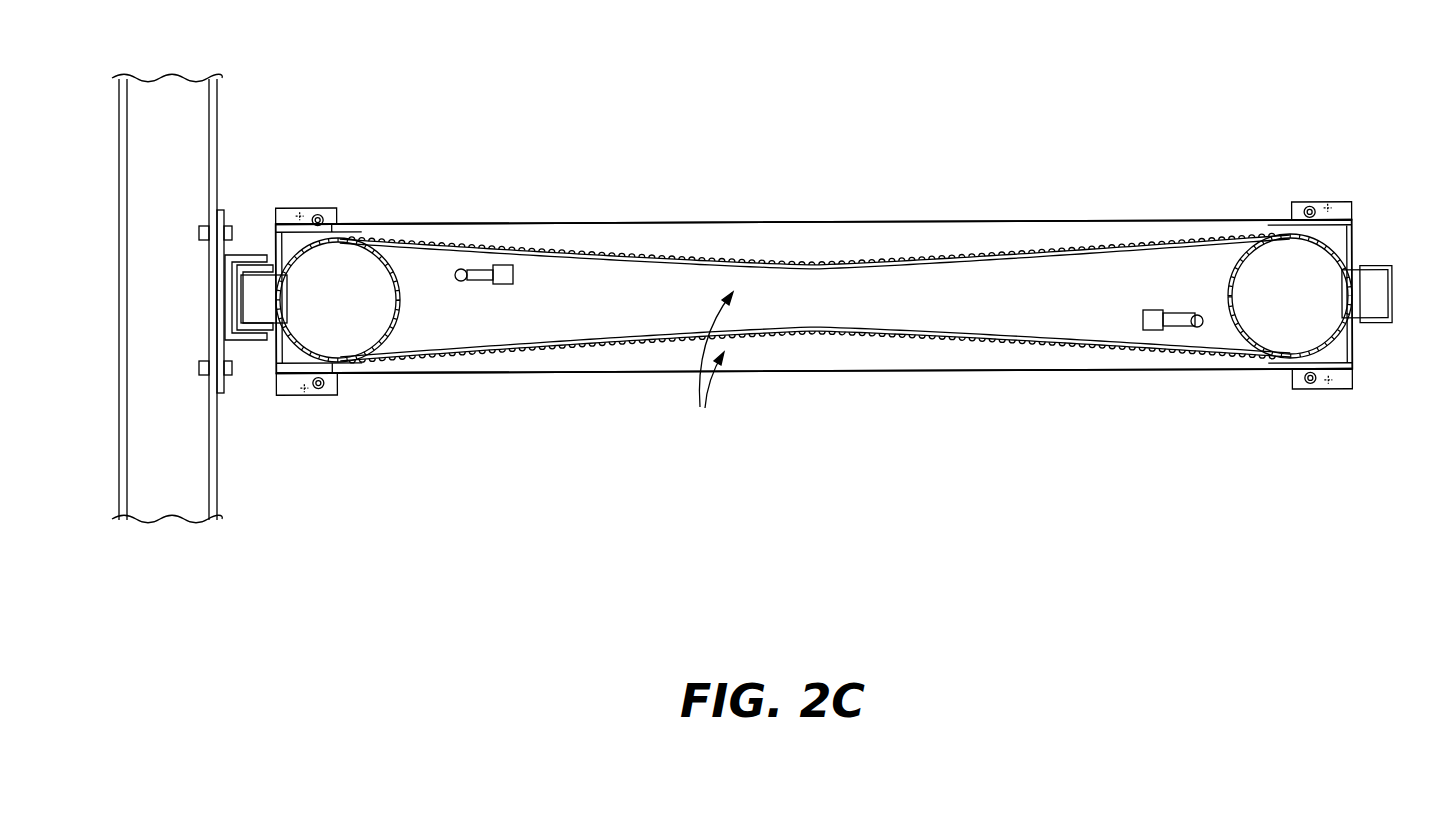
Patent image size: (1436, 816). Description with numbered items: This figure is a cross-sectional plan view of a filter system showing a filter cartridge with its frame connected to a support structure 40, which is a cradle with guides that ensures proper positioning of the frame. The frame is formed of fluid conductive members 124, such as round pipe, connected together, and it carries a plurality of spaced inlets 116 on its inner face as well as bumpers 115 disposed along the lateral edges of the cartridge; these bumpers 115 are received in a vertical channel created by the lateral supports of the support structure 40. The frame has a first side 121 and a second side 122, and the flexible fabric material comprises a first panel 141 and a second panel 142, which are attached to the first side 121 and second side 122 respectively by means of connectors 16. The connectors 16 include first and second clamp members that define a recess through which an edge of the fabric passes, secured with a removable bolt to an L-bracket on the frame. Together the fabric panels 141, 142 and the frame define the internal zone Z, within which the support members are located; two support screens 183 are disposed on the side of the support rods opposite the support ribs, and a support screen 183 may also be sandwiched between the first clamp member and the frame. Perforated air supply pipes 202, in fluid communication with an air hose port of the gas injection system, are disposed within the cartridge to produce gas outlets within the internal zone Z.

The support structure 40 is at (217, 62).
The connectors 16 is at (303, 172).
The first panel 141 is at (815, 222).
The second panel 142 is at (815, 372).
The support screens 183 is at (989, 256).
The spaced inlets 116 is at (398, 297).
The fluid conductive members 124 is at (395, 328).
The first side 121 is at (1287, 236).
The second side 122 is at (1288, 362).
The bumpers 115 is at (1380, 268).
The perforated air supply pipes 202 is at (467, 282).
The internal zone Z is at (712, 365).